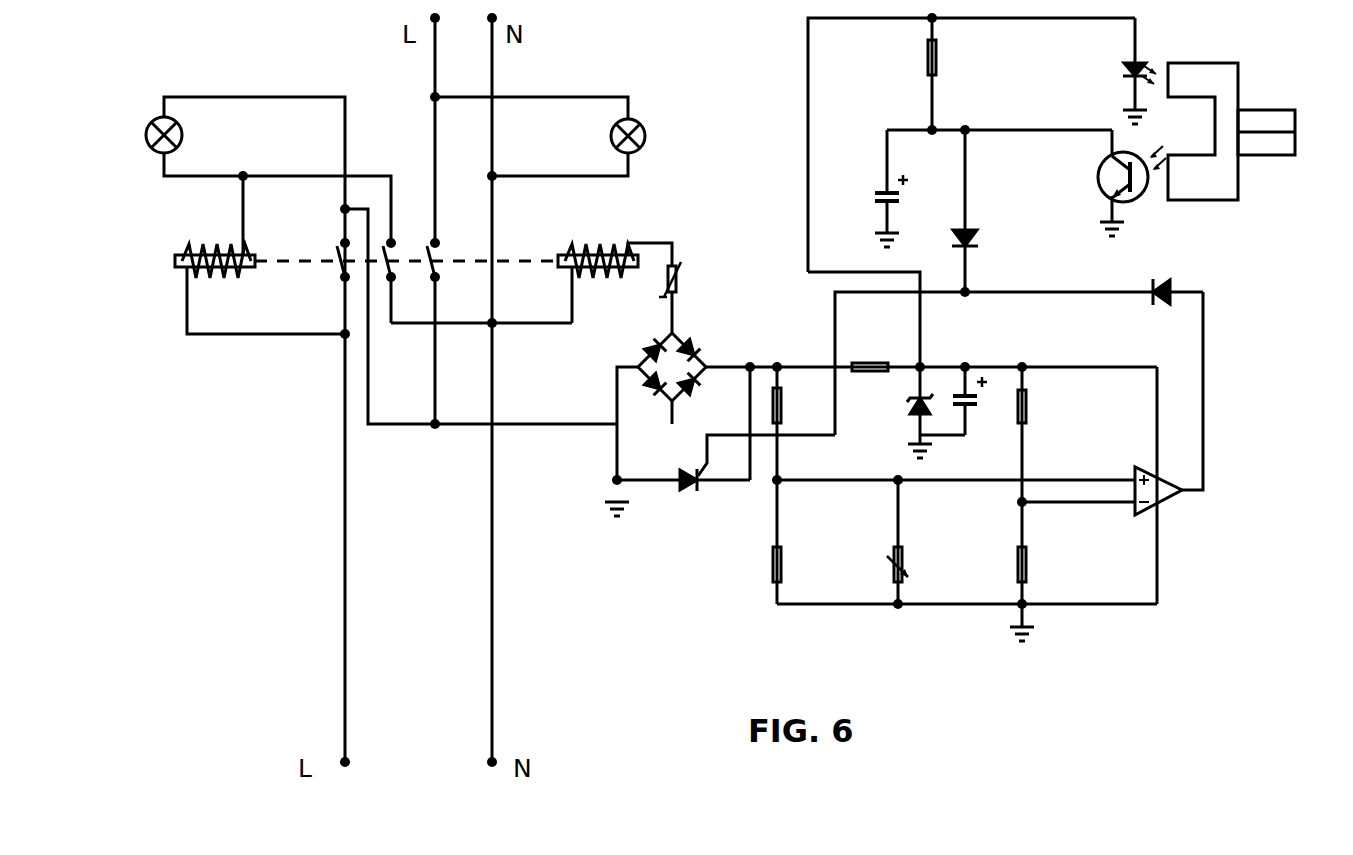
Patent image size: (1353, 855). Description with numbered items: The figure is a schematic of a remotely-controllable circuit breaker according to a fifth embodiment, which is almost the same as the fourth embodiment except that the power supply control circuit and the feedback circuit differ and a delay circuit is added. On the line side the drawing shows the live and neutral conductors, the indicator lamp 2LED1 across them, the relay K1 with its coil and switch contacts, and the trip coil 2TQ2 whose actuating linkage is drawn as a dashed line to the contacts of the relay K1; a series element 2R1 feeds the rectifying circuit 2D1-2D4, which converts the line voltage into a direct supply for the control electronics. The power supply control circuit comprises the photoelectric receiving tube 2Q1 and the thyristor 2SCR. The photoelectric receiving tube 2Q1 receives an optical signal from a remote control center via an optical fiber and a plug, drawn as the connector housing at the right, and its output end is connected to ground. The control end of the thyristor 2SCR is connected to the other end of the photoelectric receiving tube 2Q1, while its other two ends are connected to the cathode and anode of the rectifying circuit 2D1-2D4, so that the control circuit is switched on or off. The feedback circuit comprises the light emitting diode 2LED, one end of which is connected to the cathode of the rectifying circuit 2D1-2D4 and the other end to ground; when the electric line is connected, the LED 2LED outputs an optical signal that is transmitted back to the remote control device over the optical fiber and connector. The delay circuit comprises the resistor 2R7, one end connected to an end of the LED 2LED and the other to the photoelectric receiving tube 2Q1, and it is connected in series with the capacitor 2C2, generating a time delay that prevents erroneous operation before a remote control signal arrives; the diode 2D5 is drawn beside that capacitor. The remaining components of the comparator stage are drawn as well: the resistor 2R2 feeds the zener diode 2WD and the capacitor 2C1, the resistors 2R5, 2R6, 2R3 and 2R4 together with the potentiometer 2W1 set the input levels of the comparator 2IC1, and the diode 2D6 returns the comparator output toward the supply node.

The indicator lamp 2LED1 is at (589, 136).
The relay K1 is at (373, 255).
The trip coil 2TQ2 is at (610, 267).
The thermistor resistor 2R1 is at (697, 297).
The rectifying circuit 2D1-2D4 is at (712, 394).
The thyristor 2SCR is at (720, 451).
The resistor 2R5 is at (805, 483).
The resistor 2R6 is at (965, 575).
The potentiometer 2W1 is at (930, 542).
The resistor 2R2 is at (967, 349).
The zener diode 2WD is at (907, 410).
The capacitor 2C1 is at (987, 398).
The resistor 2R3 is at (1053, 494).
The resistor 2R4 is at (1049, 569).
The comparator 2IC1 is at (1008, 448).
The diode 2D6 is at (1084, 276).
The diode 2D5 is at (935, 280).
The resistor 2R7 is at (971, 190).
The capacitor 2C2 is at (867, 188).
The light emitting diode 2LED is at (1106, 71).
The photoelectric receiving tube 2Q1 is at (1108, 183).